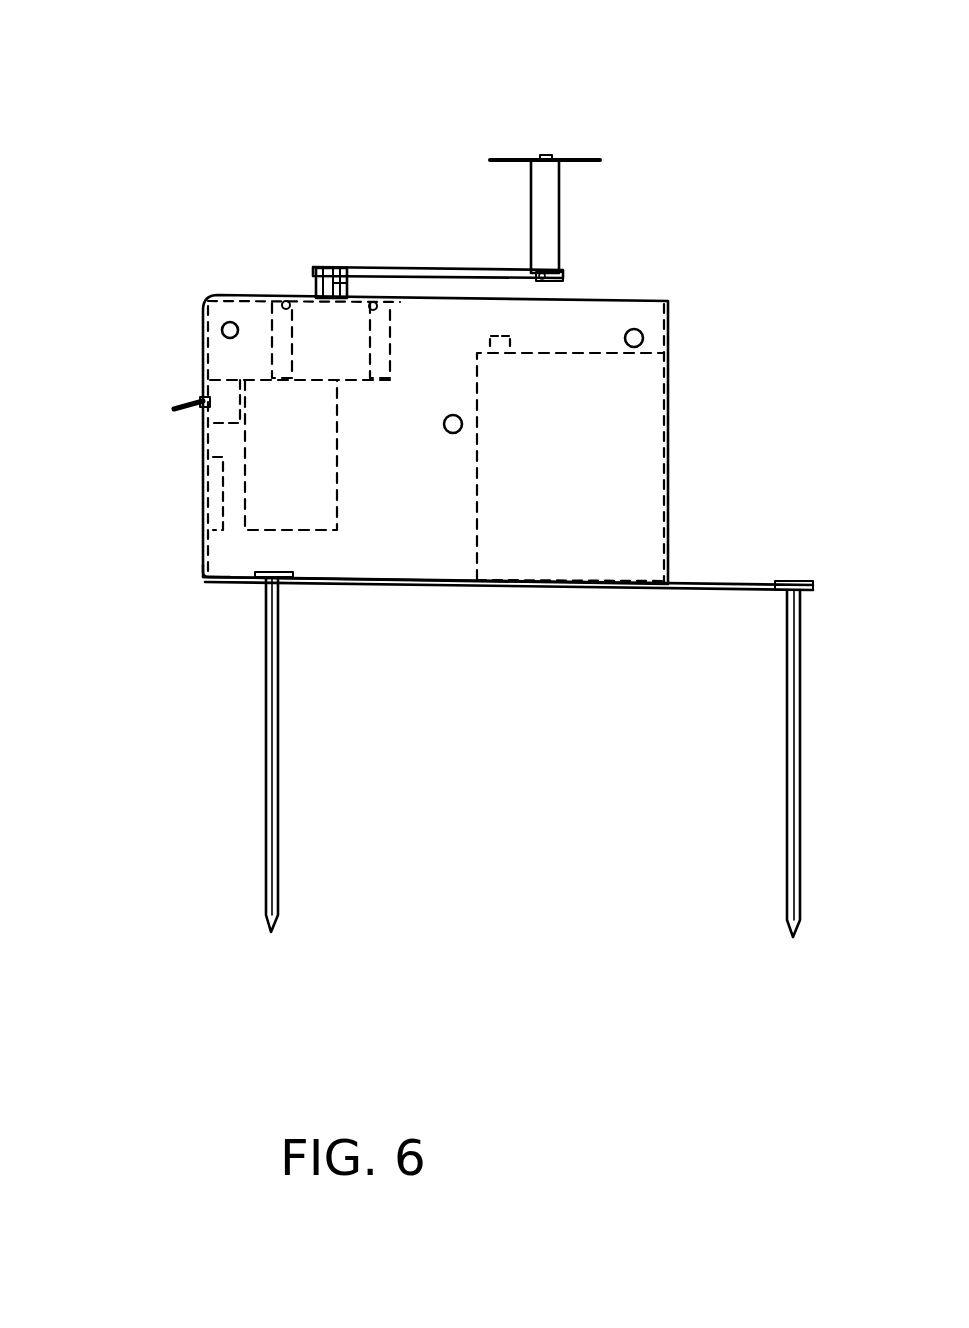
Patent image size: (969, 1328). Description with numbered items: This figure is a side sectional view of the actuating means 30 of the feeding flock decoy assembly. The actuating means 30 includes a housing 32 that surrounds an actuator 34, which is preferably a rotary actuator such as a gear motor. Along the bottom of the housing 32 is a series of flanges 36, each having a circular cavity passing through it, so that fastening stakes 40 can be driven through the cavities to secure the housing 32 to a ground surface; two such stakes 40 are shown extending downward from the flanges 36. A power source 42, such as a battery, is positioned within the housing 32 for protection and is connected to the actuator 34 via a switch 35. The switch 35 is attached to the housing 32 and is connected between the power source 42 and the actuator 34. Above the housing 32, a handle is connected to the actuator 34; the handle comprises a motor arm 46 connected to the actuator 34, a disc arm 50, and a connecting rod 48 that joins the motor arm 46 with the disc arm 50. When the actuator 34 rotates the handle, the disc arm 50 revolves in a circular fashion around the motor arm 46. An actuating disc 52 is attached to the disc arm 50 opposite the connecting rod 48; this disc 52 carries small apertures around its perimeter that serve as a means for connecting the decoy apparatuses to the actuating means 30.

The actuating means 30 is at (108, 100).
The housing 32 is at (410, 585).
The actuator 34 is at (272, 358).
The switch 35 is at (200, 400).
The flanges 36 is at (223, 585).
The fastening stakes 40 is at (266, 770).
The power source 42 is at (613, 452).
The motor arm 46 is at (316, 294).
The connecting rod 48 is at (430, 267).
The disc arm 50 is at (537, 200).
The actuating disc 52 is at (578, 160).